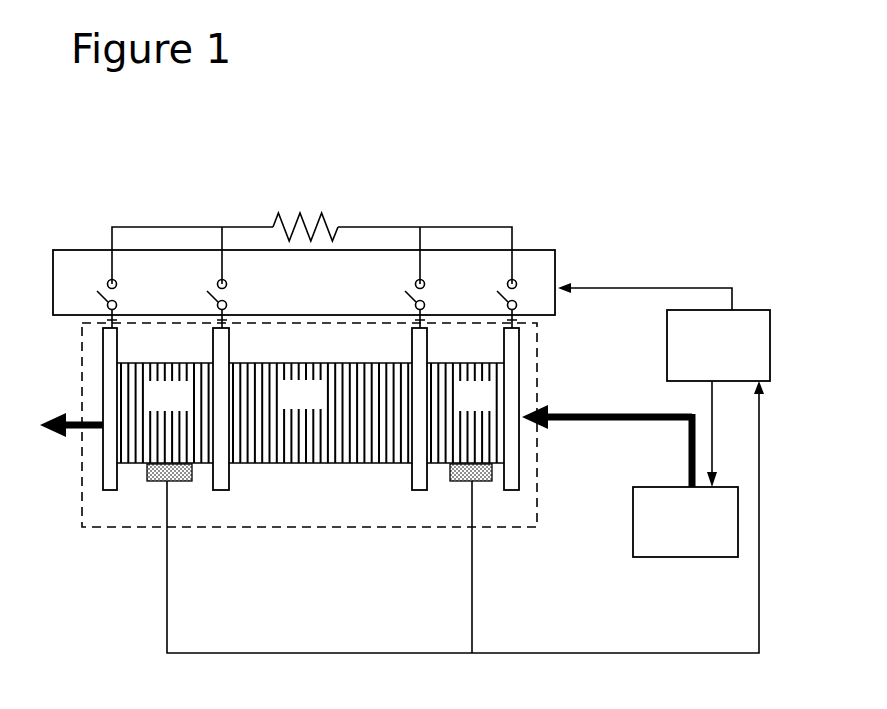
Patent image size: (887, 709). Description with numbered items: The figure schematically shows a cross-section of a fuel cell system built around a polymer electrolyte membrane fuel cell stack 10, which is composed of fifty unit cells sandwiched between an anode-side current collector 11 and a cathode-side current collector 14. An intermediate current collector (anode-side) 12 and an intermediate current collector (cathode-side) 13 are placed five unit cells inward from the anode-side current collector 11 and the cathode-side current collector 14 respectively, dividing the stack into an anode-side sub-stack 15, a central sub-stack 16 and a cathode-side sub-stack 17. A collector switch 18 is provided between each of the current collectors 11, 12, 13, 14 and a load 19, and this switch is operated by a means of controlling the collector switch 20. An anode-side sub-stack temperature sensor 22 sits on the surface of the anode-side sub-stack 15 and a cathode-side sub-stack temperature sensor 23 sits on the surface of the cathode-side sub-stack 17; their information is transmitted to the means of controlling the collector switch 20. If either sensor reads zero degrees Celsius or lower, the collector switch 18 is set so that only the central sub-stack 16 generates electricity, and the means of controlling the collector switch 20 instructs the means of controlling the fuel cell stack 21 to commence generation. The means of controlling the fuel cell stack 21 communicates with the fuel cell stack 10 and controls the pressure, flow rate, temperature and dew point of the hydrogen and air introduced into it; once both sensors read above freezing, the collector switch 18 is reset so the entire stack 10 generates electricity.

The polymer electrolyte membrane fuel cell stack 10 is at (105, 531).
The anode-side current collector 11 is at (100, 455).
The intermediate current collector (anode-side) 12 is at (221, 480).
The intermediate current collector (cathode-side) 13 is at (416, 474).
The cathode-side current collector 14 is at (519, 468).
The anode-side sub-stack 15 is at (180, 406).
The central sub-stack 16 is at (312, 405).
The cathode-side sub-stack 17 is at (486, 406).
The collector switch 18 is at (88, 243).
The load 19 is at (305, 202).
The means of controlling the collector switch 20 is at (708, 340).
The means of controlling the fuel cell stack 21 is at (684, 540).
The anode-side sub-stack temperature sensor 22 is at (154, 512).
The cathode-side sub-stack temperature sensor 23 is at (486, 502).